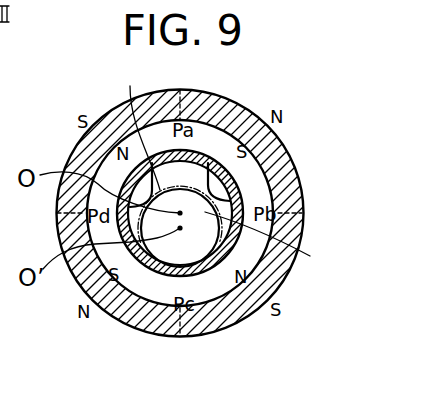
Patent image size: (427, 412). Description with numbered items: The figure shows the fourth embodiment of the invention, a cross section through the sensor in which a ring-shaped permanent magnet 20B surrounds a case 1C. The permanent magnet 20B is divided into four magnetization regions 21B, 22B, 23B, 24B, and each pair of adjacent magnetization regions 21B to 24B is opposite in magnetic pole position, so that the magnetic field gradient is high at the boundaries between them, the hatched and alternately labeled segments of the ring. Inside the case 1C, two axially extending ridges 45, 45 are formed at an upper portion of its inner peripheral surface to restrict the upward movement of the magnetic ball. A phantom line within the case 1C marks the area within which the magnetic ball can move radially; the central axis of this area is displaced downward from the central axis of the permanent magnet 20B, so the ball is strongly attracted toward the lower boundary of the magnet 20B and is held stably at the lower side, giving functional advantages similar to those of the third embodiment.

The permanent magnet 20B is at (251, 103).
The magnetization region 21B is at (280, 154).
The magnetization region 22B is at (271, 274).
The magnetization region 23B is at (122, 309).
The magnetization region 24B is at (88, 152).
The case 1C is at (246, 184).
The ridge 45 is at (224, 167).